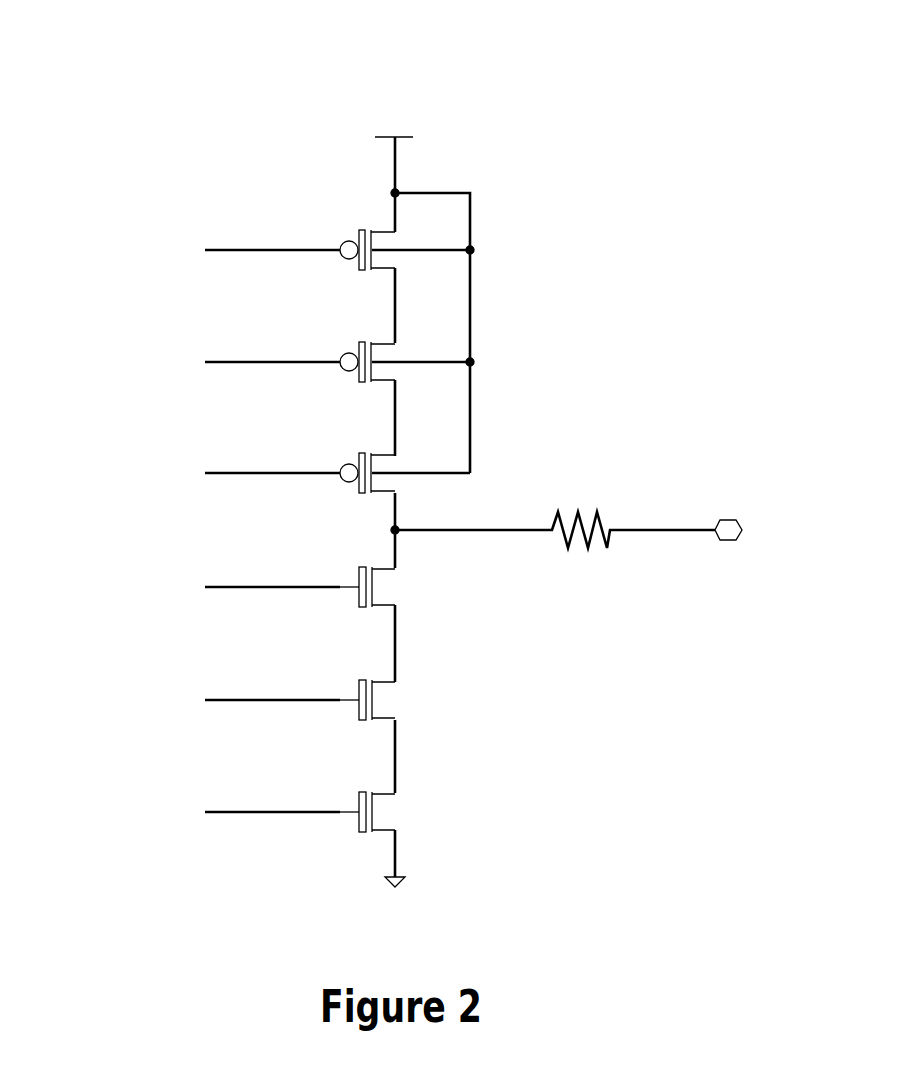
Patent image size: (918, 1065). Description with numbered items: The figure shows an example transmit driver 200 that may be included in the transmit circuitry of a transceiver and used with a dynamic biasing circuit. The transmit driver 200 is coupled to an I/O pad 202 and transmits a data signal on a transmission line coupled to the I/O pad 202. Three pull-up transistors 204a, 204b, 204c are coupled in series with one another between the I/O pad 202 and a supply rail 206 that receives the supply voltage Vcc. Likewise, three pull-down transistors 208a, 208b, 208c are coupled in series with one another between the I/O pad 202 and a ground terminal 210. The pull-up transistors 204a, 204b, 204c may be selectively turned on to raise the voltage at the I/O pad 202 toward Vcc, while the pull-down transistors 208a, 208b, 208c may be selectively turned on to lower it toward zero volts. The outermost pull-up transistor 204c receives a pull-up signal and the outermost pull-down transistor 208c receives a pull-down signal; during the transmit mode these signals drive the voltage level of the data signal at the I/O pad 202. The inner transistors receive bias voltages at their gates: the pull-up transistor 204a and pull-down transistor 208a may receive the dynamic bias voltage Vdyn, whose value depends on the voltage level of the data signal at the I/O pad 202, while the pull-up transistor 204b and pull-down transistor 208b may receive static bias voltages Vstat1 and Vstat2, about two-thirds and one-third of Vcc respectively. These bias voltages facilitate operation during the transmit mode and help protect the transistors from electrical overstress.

The transmit driver 200 is at (88, 128).
The I/O pad 202 is at (738, 521).
The pull-up transistor 204a is at (402, 460).
The pull-up transistor 204b is at (402, 348).
The pull-up transistor 204c is at (406, 236).
The supply rail 206 is at (400, 137).
The pull-down transistor 208a is at (402, 603).
The pull-down transistor 208b is at (402, 718).
The pull-down transistor 208c is at (402, 828).
The ground terminal 210 is at (392, 884).